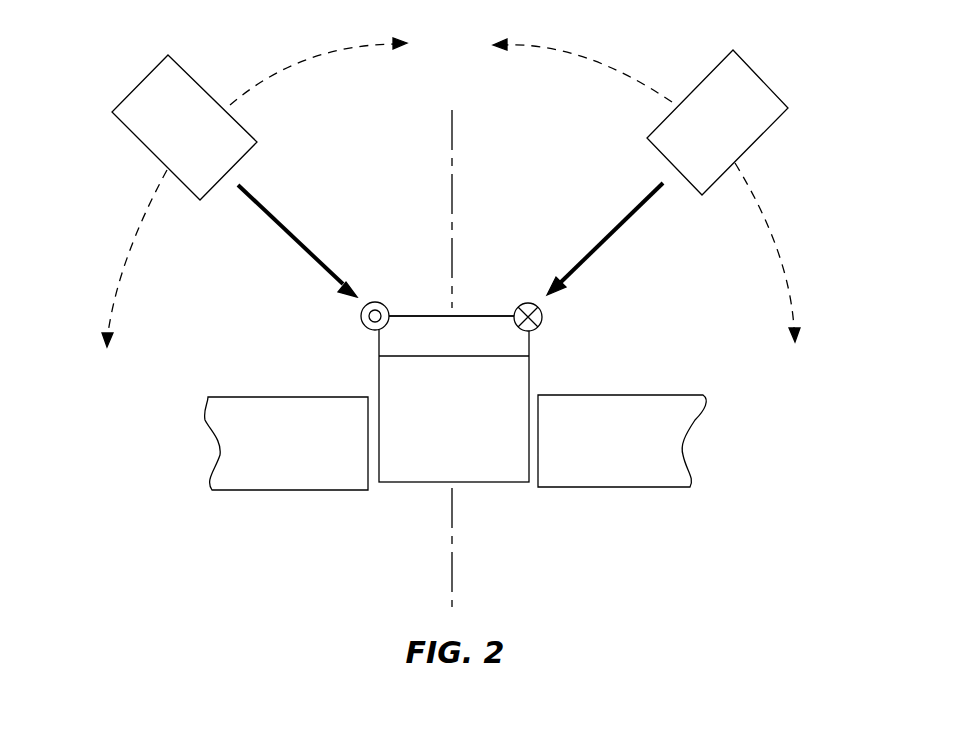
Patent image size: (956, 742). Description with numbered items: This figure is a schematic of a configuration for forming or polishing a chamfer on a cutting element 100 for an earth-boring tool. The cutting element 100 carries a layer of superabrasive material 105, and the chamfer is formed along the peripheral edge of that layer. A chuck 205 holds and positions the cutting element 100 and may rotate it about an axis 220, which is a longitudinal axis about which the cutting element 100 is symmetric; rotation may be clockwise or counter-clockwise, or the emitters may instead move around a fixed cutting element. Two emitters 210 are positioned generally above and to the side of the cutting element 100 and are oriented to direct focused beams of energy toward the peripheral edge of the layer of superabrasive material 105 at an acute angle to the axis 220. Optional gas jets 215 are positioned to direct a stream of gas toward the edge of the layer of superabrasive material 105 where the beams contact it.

The cutting element 100 is at (423, 483).
The layer of superabrasive material 105 is at (483, 313).
The chuck 205 is at (456, 442).
The emitter 210 is at (451, 192).
The gas jet 215 is at (361, 317).
The axis 220 is at (450, 137).